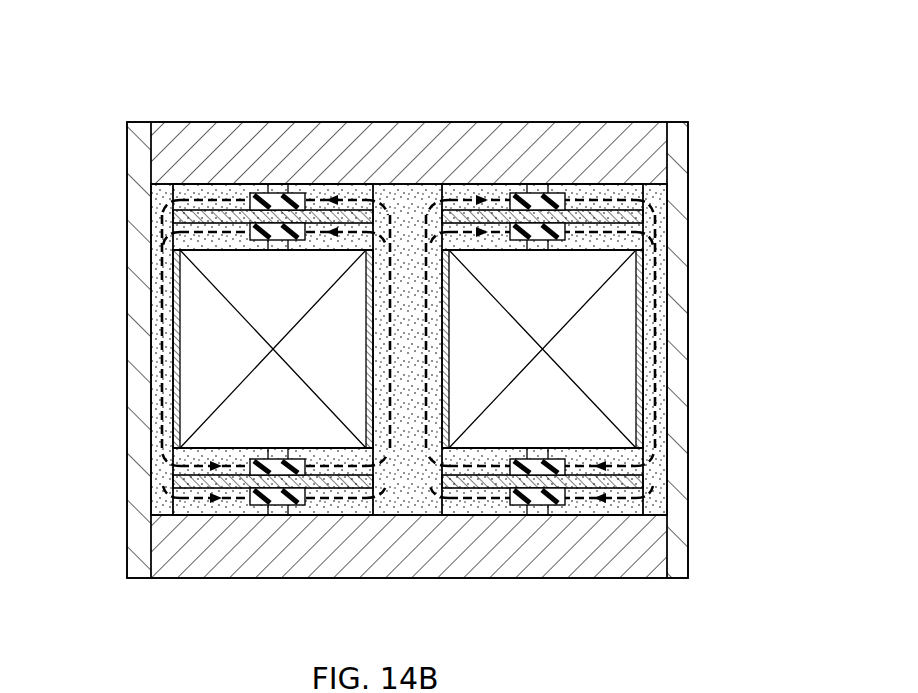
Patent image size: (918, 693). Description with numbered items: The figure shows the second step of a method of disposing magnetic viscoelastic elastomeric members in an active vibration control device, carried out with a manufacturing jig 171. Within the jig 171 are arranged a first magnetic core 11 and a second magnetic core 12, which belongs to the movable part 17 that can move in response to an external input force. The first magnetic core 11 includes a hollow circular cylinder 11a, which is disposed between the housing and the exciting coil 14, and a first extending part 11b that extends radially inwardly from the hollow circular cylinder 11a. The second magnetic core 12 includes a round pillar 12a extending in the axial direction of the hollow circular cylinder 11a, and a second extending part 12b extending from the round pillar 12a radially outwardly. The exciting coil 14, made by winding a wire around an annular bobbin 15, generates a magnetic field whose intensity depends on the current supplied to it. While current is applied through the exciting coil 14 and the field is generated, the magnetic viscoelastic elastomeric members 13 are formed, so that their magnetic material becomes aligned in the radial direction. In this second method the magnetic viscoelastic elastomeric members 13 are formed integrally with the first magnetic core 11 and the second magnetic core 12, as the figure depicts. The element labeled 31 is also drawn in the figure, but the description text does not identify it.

The manufacturing jig 171 is at (723, 98).
The first magnetic core 11 is at (482, 349).
The hollow circular cylinder 11a is at (662, 267).
The first extending part 11b is at (640, 204).
The second magnetic core 12 is at (508, 271).
The round pillar 12a is at (401, 192).
The second extending part 12b is at (458, 200).
The magnetic viscoelastic elastomeric member 13 is at (276, 194).
The exciting coil 14 is at (197, 315).
The bobbin 15 is at (171, 372).
The movable part 17 is at (357, 183).
The circuit board 31 is at (214, 199).